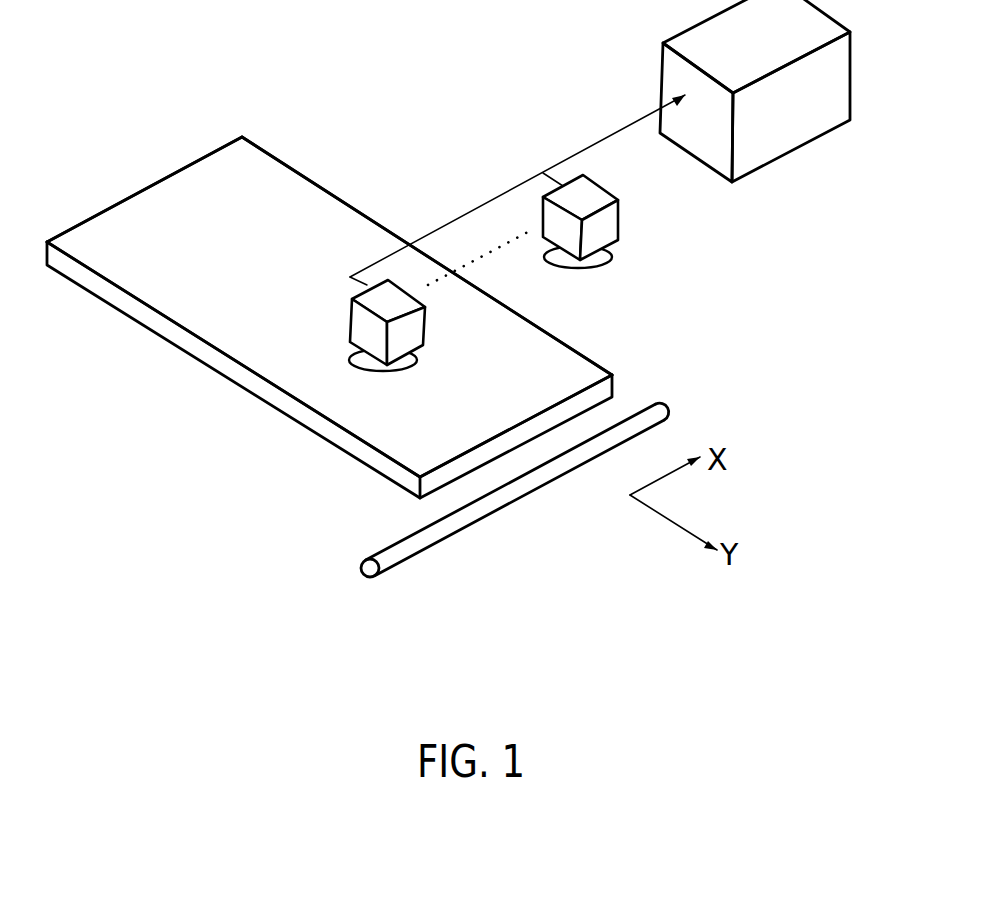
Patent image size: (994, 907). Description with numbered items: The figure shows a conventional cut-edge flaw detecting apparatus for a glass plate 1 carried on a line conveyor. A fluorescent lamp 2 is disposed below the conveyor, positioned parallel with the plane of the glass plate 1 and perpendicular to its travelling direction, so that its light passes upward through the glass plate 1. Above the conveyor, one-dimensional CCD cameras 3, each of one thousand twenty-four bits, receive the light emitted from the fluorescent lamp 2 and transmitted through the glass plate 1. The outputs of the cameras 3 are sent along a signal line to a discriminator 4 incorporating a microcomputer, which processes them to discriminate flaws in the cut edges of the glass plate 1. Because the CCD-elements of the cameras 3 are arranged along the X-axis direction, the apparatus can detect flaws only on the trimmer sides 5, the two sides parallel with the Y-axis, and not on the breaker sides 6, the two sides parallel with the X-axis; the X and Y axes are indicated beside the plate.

The glass plate 1 is at (225, 193).
The fluorescent lamp 2 is at (463, 520).
The one-dimensional CCD camera 3 is at (410, 325).
The discriminator 4 is at (793, 133).
The trimmer sides 5 is at (328, 193).
The breaker sides 6 is at (117, 202).